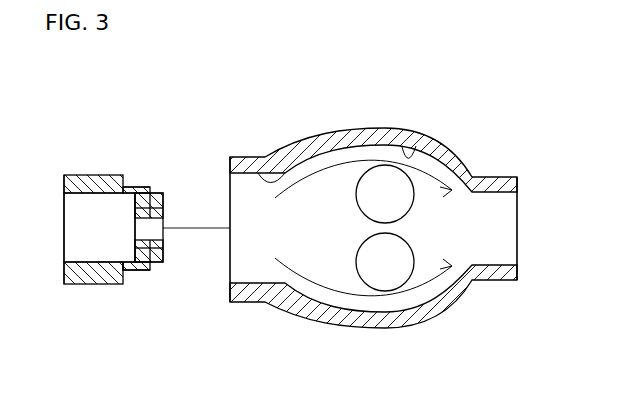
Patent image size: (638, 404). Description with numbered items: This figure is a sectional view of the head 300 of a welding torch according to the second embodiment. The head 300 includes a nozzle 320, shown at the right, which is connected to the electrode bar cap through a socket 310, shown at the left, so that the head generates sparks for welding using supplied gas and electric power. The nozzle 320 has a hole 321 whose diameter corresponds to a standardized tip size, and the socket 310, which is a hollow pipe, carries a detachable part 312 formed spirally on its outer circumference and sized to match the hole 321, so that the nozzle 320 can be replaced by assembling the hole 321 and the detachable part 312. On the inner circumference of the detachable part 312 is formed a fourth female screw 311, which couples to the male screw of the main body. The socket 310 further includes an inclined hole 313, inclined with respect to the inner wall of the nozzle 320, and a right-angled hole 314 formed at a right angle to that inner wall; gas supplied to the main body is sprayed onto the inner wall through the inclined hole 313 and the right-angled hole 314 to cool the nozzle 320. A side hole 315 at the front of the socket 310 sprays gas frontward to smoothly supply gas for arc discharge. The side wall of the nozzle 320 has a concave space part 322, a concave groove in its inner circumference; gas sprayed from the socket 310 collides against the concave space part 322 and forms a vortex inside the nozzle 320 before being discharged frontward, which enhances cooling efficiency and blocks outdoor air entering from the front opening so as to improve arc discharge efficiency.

The head 300 is at (196, 170).
The socket 310 is at (105, 174).
The fourth female screw 311 is at (78, 256).
The detachable part 312 is at (80, 174).
The inclined hole 313 is at (152, 270).
The right-angled hole 314 is at (128, 271).
The side hole 315 is at (165, 250).
The nozzle 320 is at (508, 176).
The hole 321 is at (287, 158).
The concave space part 322 is at (410, 158).